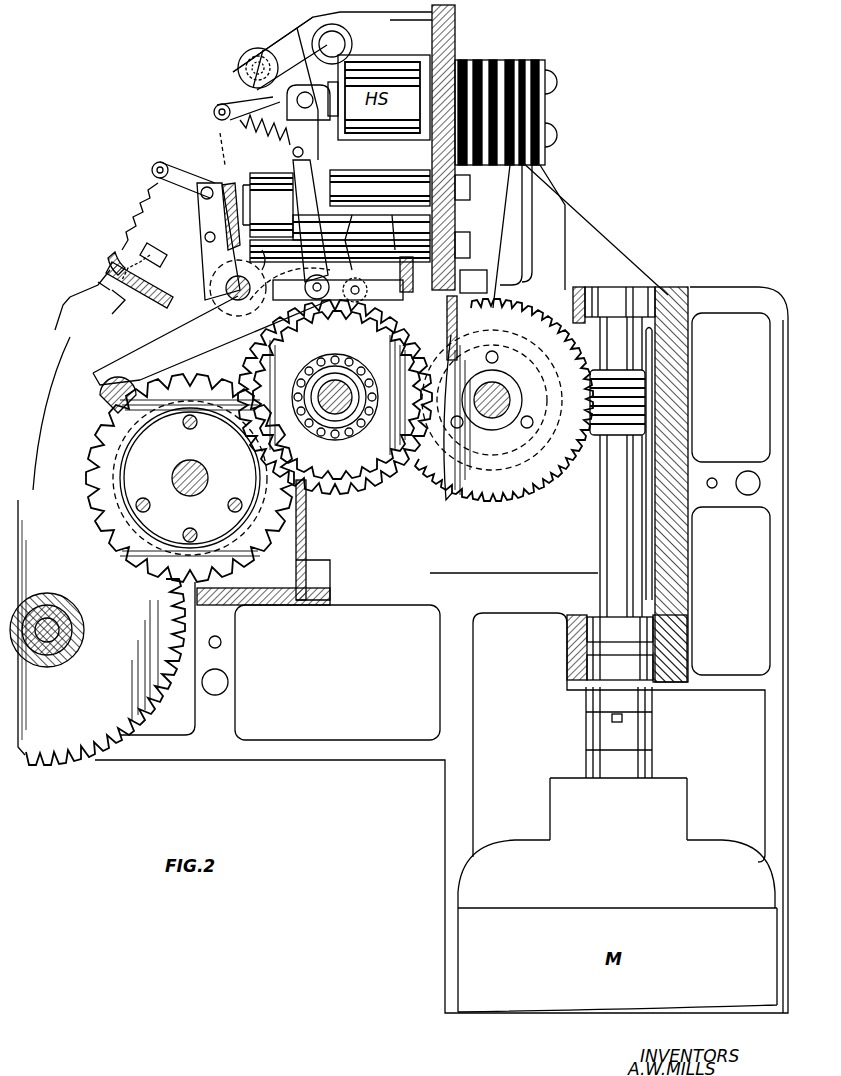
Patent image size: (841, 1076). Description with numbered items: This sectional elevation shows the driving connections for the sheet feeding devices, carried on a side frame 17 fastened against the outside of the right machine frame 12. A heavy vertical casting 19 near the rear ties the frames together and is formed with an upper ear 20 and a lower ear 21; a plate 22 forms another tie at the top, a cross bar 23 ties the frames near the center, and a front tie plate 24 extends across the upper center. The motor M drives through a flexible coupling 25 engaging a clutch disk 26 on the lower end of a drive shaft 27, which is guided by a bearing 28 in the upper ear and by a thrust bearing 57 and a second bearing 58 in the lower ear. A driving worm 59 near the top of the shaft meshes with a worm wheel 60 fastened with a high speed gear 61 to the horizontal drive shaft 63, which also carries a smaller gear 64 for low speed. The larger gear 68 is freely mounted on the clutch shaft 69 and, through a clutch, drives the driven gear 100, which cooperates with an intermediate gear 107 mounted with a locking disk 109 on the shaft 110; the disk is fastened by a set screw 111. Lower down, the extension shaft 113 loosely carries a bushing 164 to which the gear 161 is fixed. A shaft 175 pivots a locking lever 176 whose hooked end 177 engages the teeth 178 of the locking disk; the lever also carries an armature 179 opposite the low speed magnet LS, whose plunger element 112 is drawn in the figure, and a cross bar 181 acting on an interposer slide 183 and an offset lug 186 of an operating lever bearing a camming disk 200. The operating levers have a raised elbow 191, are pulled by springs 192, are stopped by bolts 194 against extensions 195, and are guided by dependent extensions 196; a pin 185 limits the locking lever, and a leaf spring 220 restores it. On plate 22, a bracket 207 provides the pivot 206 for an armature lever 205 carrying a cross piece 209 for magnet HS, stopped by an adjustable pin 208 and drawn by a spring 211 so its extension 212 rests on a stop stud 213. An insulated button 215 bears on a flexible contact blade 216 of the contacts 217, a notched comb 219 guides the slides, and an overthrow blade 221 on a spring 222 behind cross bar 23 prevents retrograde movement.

The right machine frame 12 is at (318, 333).
The side frame 17 is at (345, 757).
The vertical casting 19 is at (680, 370).
The upper ear 20 is at (578, 290).
The lower ear 21 is at (580, 650).
The plate 22 is at (455, 42).
The cross bar 23 is at (275, 606).
The front tie plate 24 is at (65, 297).
The flexible coupling 25 is at (650, 740).
The clutch disk 26 is at (590, 703).
The drive shaft 27 is at (612, 554).
The bearing 28 is at (640, 297).
The thrust bearing 57 is at (598, 628).
The bearing 58 is at (590, 665).
The driving worm 59 is at (615, 432).
The worm wheel 60 is at (510, 490).
The high speed control gear 61 is at (480, 490).
The horizontal drive shaft 63 is at (495, 392).
The smaller gear 64 is at (488, 328).
The gear 68 is at (378, 485).
The clutch shaft 69 is at (340, 392).
The driven gear 100 is at (375, 450).
The intermediate gear 107 is at (88, 484).
The locking disk 109 is at (112, 450).
The shaft 110 is at (205, 475).
The set screw 111 is at (183, 426).
The plunger 112 is at (336, 217).
The extension shaft 113 is at (62, 600).
The gear 161 is at (97, 750).
The bushing 164 is at (42, 660).
The shaft 175 is at (232, 298).
The locking lever 176 is at (96, 380).
The hooked end 177 is at (105, 408).
The teeth 178 is at (100, 417).
The armature 179 is at (264, 203).
The cross bar 181 is at (401, 226).
The interposer slide 183 is at (361, 236).
The pin 185 is at (278, 263).
The offset lug 186 is at (415, 295).
The raised elbow 191 is at (205, 180).
The spring 192 is at (152, 190).
The bolt 194 is at (130, 262).
The extension 195 is at (200, 237).
The dependent extension 196 is at (150, 310).
The camming disk 200 is at (385, 300).
The armature lever 205 is at (328, 145).
The pivot 206 is at (346, 46).
The bracket 207 is at (455, 18).
The adjustable pin 208 is at (377, 172).
The cross piece 209 is at (290, 40).
The spring 211 is at (262, 140).
The extension 212 is at (215, 105).
The stop stud 213 is at (242, 62).
The insulated button 215 is at (561, 241).
The flexible contact blade 216 is at (490, 305).
The contacts 217 is at (520, 300).
The notched comb 219 is at (438, 328).
The leaf spring 220 is at (117, 347).
The blade 221 is at (306, 522).
The spring 222 is at (306, 555).